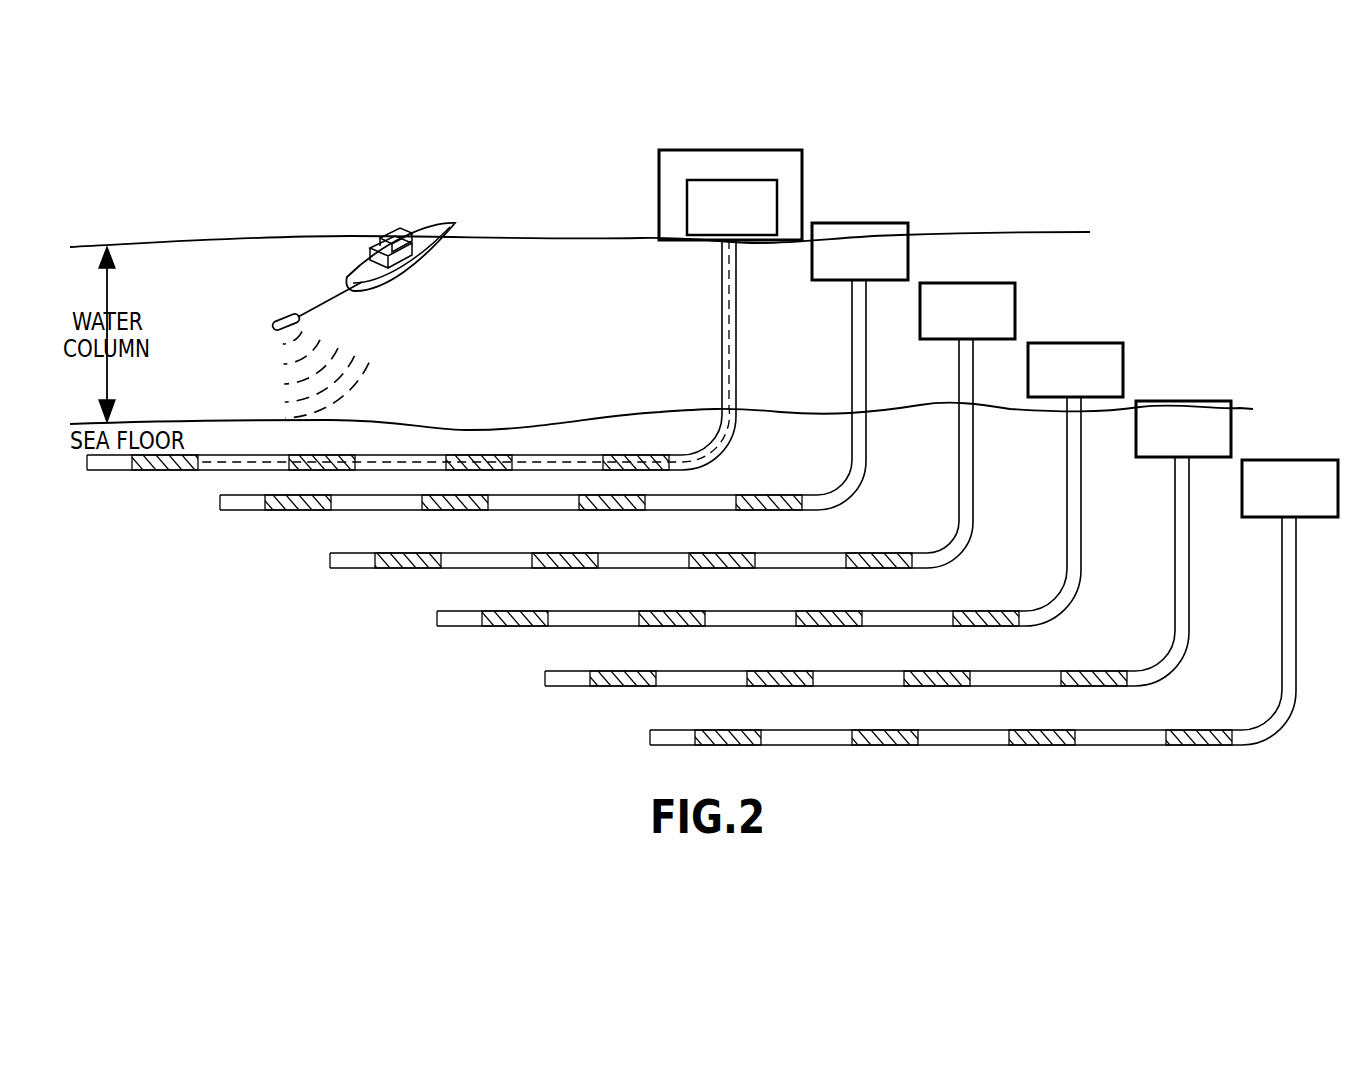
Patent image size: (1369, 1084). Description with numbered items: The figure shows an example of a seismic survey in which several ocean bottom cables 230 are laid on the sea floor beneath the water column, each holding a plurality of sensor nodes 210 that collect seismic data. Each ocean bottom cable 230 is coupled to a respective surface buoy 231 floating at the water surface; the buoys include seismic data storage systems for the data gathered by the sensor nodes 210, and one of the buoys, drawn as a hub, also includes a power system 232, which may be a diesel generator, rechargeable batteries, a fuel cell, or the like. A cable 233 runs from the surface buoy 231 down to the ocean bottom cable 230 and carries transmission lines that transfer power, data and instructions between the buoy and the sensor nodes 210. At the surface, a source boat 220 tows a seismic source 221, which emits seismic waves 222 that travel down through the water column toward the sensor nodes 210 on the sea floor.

The sensor nodes 210 is at (664, 586).
The source boat 220 is at (418, 254).
The seismic source 221 is at (278, 326).
The seismic waves 222 is at (322, 346).
The ocean bottom cable 230 is at (255, 455).
The surface buoy 231 is at (745, 150).
The power system 232 is at (777, 193).
The cable 233 is at (730, 366).